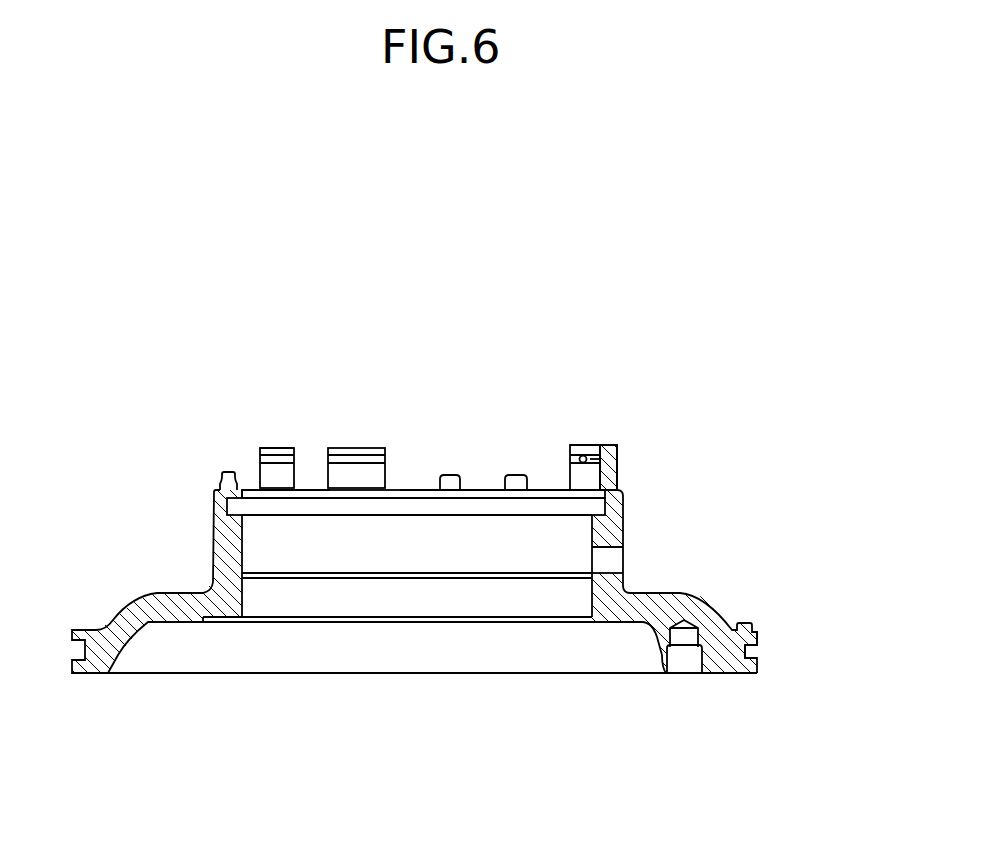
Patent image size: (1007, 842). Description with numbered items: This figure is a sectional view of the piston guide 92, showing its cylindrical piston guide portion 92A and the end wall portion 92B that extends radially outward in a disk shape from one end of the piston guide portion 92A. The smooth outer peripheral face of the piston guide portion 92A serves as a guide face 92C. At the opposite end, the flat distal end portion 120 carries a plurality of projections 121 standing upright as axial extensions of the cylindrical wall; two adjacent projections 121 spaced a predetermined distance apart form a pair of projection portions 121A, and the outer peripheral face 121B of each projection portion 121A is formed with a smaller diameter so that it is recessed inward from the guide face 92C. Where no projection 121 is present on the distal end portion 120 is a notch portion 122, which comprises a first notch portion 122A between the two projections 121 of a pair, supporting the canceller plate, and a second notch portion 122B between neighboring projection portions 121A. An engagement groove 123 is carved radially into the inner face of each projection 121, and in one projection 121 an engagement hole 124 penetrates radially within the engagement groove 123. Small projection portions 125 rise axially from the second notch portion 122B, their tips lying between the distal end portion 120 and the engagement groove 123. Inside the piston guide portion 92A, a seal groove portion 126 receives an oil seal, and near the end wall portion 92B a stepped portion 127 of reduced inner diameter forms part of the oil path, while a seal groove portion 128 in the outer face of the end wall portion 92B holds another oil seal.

The piston guide 92 is at (728, 233).
The piston guide portion 92A is at (625, 510).
The end wall portion 92B is at (713, 608).
The guide face 92C is at (625, 533).
The distal end portion 120 is at (540, 488).
The projection 121 is at (278, 455).
The projection portion 121A is at (244, 439).
The outer peripheral face 121B is at (619, 455).
The notch portion 122 is at (532, 415).
The first notch portion 122A is at (314, 488).
The second notch portion 122B is at (424, 488).
The engagement groove 123 is at (289, 458).
The engagement hole 124 is at (580, 452).
The projection portion 125 is at (222, 472).
The seal groove portion 126 is at (235, 508).
The stepped portion 127 is at (590, 578).
The seal groove portion 128 is at (757, 652).